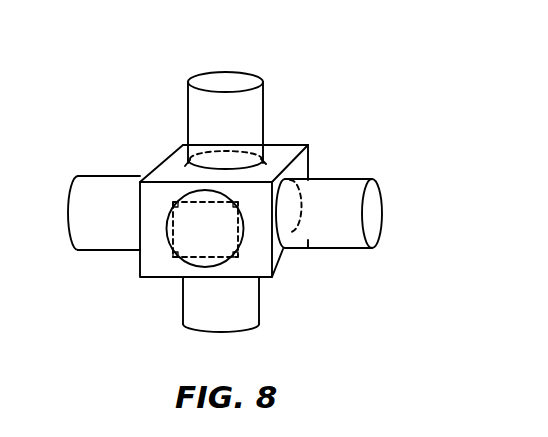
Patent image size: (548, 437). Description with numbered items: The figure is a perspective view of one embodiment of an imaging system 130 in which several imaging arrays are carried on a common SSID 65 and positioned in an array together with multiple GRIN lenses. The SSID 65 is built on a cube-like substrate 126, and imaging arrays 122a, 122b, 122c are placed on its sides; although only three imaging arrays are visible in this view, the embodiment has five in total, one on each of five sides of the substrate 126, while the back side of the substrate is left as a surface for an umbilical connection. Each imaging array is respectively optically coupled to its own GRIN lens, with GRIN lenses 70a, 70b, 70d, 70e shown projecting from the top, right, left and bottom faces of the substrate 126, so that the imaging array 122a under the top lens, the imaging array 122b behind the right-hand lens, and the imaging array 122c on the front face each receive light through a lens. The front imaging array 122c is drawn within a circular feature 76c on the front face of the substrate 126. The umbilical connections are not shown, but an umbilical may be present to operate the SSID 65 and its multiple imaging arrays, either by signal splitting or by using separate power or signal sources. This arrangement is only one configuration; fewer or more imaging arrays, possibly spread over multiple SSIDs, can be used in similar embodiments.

The imaging system 130 is at (388, 92).
The SSID 65 is at (165, 138).
The GRIN lens 70a is at (218, 105).
The GRIN lens 70b is at (342, 208).
The GRIN lens 70d is at (100, 190).
The GRIN lens 70e is at (233, 310).
The imaging array 122a is at (235, 160).
The imaging array 122b is at (290, 202).
The imaging array 122c is at (195, 232).
The circular boss 76c is at (245, 240).
The substrate 126 is at (165, 265).